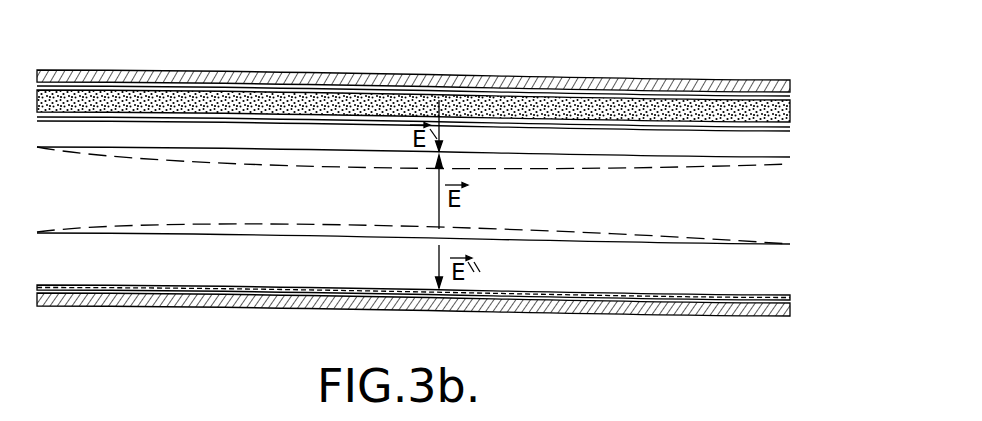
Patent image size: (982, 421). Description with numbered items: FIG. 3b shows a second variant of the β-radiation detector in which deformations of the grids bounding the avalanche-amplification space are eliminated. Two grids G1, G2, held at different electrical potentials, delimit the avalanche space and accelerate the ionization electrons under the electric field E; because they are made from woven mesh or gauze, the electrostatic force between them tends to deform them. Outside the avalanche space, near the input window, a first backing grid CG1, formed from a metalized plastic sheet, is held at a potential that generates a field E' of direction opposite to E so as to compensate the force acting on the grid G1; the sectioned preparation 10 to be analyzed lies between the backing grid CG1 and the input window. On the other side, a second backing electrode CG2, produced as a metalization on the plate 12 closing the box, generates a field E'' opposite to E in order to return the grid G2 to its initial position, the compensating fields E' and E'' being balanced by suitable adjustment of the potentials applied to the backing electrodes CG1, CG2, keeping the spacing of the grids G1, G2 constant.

The sectioned preparation 10 is at (543, 101).
The plate 12 is at (670, 316).
The backing grid CG1 is at (690, 87).
The second backing electrode CG2 is at (458, 300).
The grid G1 is at (760, 158).
The grid G2 is at (777, 247).